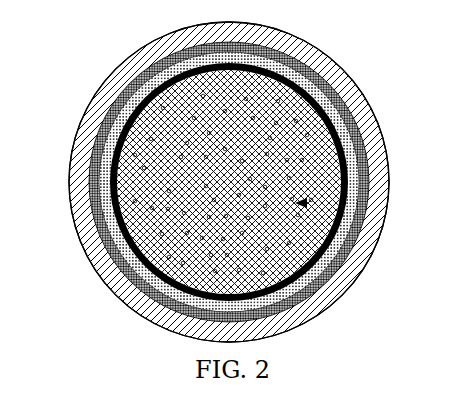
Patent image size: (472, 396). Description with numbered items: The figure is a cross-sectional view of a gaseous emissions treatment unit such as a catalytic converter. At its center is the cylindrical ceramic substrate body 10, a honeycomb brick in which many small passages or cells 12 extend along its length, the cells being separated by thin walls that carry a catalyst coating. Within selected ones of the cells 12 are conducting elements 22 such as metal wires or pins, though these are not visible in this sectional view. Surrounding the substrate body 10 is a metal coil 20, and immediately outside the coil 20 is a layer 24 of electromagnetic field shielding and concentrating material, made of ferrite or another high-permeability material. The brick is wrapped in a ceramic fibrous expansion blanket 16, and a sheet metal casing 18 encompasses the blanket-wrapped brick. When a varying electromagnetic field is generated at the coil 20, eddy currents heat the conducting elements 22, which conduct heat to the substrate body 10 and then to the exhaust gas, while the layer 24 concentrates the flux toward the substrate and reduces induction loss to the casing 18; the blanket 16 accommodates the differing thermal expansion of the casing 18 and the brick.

The substrate body 10 is at (369, 231).
The cells 12 is at (317, 70).
The expansion blanket 16 is at (170, 40).
The casing 18 is at (68, 197).
The metal coil 20 is at (380, 162).
The conducting elements 22 is at (117, 270).
The layer of electromagnetic field shielding/concentrating material 24 is at (90, 129).